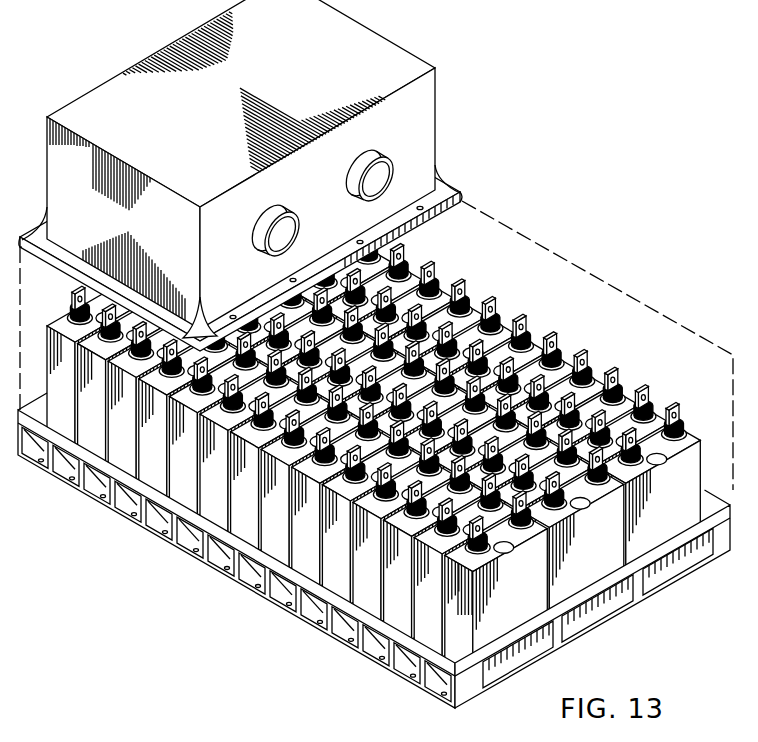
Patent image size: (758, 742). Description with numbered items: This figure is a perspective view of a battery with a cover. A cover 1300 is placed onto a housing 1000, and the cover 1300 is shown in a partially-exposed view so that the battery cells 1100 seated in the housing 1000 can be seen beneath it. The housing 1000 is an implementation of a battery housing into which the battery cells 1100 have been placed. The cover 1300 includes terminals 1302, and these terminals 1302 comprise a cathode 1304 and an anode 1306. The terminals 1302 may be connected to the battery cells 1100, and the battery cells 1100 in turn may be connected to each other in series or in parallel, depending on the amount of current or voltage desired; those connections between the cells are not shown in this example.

The housing 1000 is at (374, 440).
The battery cells 1100 is at (530, 323).
The cover 1300 is at (603, 271).
The terminals 1302 is at (366, 170).
The cathode 1304 is at (374, 197).
The anode 1306 is at (300, 218).